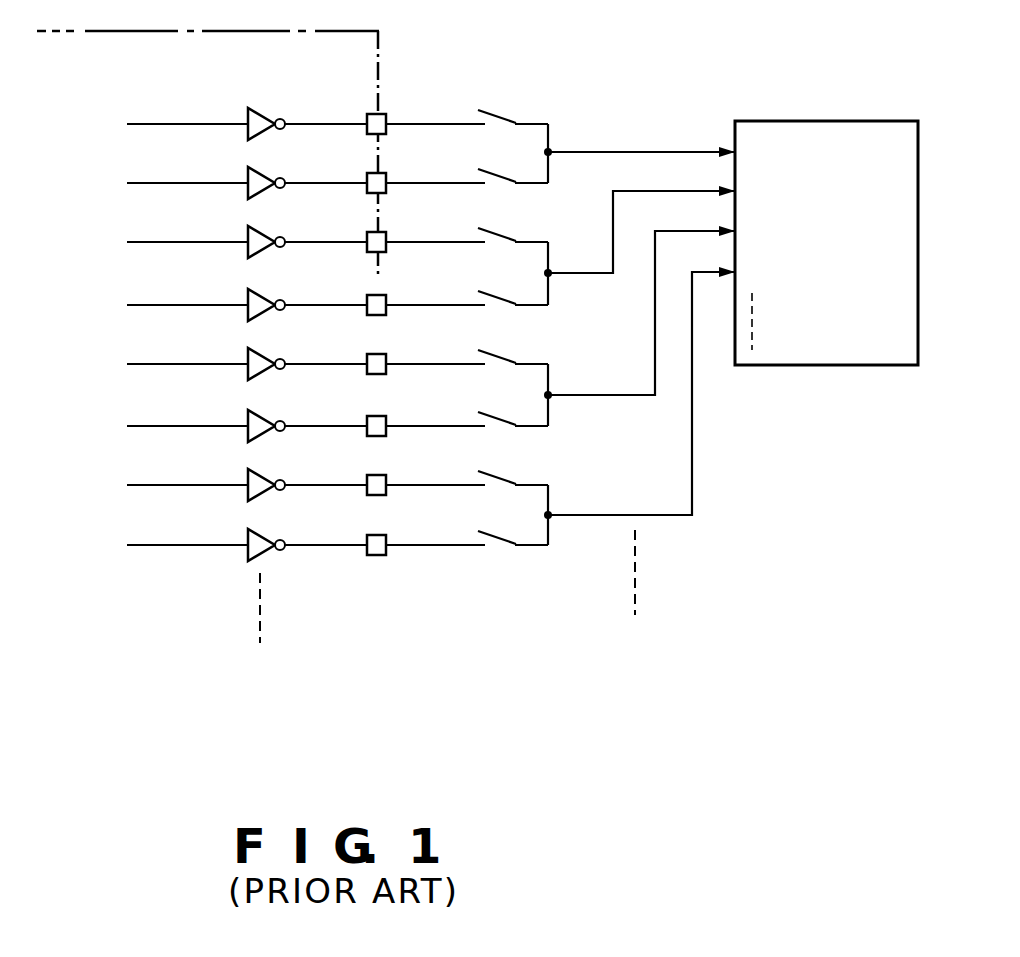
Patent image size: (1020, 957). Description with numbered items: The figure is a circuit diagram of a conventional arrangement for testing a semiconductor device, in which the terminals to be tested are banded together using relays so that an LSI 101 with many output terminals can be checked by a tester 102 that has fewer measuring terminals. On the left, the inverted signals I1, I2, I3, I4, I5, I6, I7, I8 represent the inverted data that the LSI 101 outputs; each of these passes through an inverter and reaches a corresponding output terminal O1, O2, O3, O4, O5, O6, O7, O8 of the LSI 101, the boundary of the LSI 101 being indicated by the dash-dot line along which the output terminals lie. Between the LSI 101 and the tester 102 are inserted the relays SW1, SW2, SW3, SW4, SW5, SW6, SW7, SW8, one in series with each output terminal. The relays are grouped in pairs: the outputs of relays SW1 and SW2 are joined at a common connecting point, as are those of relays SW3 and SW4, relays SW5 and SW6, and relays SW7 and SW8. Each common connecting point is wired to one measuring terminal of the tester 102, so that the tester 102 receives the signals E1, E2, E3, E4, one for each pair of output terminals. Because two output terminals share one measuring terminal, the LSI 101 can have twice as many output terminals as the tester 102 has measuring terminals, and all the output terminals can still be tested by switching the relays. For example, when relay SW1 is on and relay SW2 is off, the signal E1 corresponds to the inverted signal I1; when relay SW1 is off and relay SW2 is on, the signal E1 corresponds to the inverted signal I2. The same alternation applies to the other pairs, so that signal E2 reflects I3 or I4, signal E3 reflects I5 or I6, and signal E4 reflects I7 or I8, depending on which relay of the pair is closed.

The LSI 101 is at (380, 48).
The tester 102 is at (818, 217).
The inverted signal I1 is at (110, 106).
The inverted signal I2 is at (113, 165).
The inverted signal I3 is at (113, 224).
The inverted signal I4 is at (113, 287).
The inverted signal I5 is at (113, 346).
The inverted signal I6 is at (113, 408).
The inverted signal I7 is at (113, 467).
The inverted signal I8 is at (113, 527).
The output terminal O1 is at (390, 106).
The output terminal O2 is at (394, 169).
The output terminal O3 is at (394, 230).
The output terminal O4 is at (394, 292).
The output terminal O5 is at (394, 349).
The output terminal O6 is at (394, 416).
The output terminal O7 is at (394, 472).
The output terminal O8 is at (394, 532).
The relay SW1 is at (467, 97).
The relay SW2 is at (467, 159).
The relay SW3 is at (467, 218).
The relay SW4 is at (467, 281).
The relay SW5 is at (467, 339).
The relay SW6 is at (467, 402).
The relay SW7 is at (467, 459).
The relay SW8 is at (467, 522).
The signal supplied to the tester E1 is at (746, 152).
The signal supplied to the tester E2 is at (747, 191).
The signal supplied to the tester E3 is at (747, 231).
The signal supplied to the tester E4 is at (747, 272).